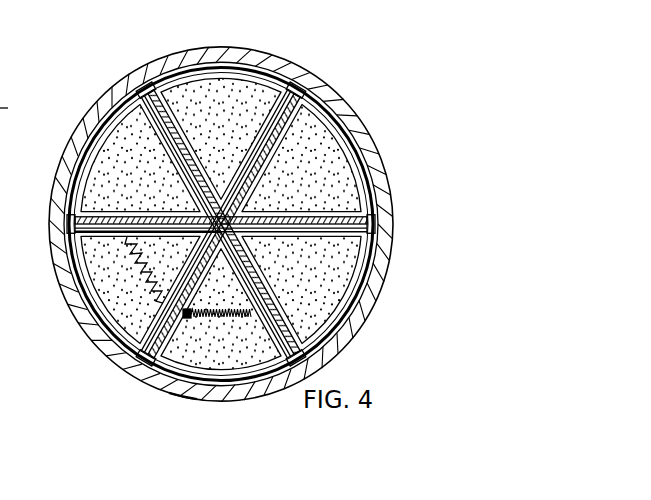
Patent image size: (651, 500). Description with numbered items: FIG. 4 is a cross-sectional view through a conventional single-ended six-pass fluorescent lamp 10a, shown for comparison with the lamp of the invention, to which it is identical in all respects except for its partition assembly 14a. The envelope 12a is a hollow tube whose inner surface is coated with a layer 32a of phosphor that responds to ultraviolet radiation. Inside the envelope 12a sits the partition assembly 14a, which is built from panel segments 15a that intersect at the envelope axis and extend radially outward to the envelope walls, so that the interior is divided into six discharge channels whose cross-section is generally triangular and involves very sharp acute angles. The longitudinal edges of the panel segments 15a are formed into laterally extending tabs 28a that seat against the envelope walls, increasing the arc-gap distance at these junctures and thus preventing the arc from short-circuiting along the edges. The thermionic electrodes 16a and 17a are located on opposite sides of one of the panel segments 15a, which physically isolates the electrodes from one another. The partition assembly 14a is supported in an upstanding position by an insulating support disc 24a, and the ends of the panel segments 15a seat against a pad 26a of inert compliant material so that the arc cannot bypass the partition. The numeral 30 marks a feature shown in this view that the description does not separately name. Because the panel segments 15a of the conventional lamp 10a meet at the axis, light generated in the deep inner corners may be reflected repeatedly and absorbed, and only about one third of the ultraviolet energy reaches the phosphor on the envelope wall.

The fluorescent lamp 10a is at (70, 366).
The envelope 12a is at (118, 362).
The partition assembly 14a is at (329, 109).
The panel segments 15a is at (172, 118).
The thermionic electrode 16a is at (147, 268).
The thermionic electrode 17a is at (208, 322).
The support disc 24a is at (328, 151).
The pad 26a is at (143, 214).
The tabs 28a is at (139, 88).
The container 30 is at (14, 110).
The phosphor layer 32a is at (183, 393).